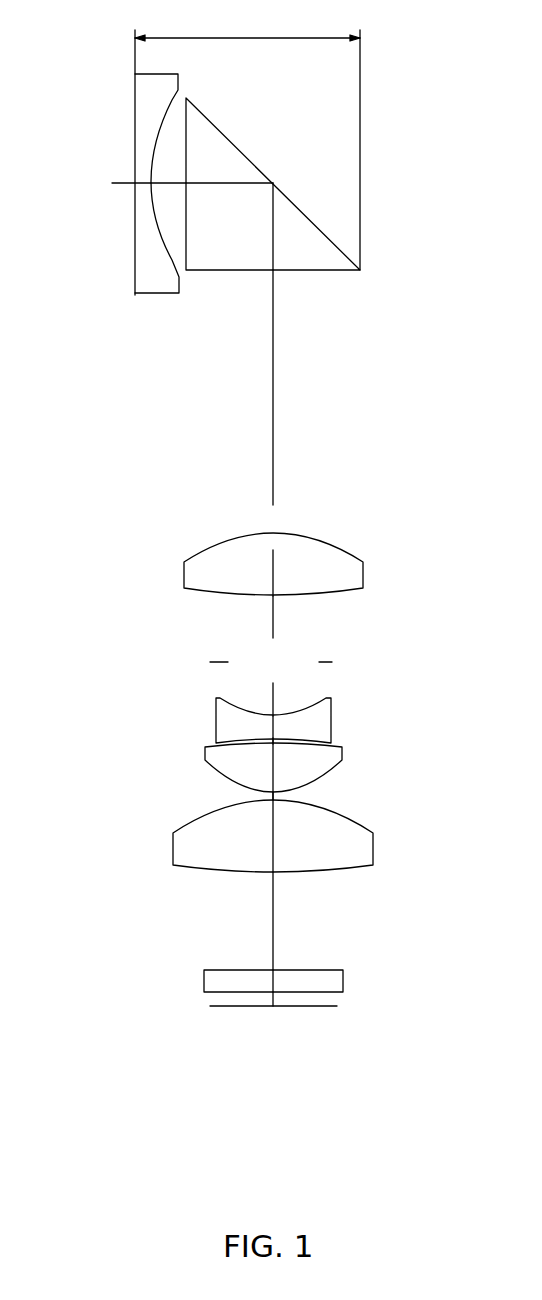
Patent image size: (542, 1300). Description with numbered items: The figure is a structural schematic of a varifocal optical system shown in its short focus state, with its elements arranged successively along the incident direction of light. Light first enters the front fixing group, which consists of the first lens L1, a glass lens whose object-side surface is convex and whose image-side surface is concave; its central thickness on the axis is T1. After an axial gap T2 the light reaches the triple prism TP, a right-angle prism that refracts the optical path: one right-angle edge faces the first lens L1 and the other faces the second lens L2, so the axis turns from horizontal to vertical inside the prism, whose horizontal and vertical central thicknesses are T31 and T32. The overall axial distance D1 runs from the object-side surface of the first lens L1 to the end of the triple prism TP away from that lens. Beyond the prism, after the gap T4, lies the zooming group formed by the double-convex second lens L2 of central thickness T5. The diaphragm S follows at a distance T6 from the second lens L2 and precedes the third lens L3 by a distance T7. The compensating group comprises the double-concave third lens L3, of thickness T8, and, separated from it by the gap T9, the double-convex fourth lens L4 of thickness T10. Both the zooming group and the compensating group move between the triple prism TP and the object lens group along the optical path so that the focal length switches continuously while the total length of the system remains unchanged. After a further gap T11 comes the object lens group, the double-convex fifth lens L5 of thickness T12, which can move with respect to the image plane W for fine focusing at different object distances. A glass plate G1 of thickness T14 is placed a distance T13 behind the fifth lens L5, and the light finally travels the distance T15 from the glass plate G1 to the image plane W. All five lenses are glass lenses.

The first lens L1 is at (148, 105).
The triple prism TP is at (307, 243).
The second lens L2 is at (307, 570).
The diaphragm S is at (322, 662).
The third lens L3 is at (317, 725).
The fourth lens L4 is at (312, 758).
The fifth lens L5 is at (330, 853).
The glass plate G1 is at (298, 984).
The image plane W is at (302, 1006).
The axial distance from object-side surface of first lens to far end of triple prism D1 is at (247, 28).
The central thickness of the first lens T1 is at (131, 173).
The axial distance from first lens to triple prism T2 is at (168, 173).
The horizontal central thickness of the triple prism T31 is at (229, 173).
The vertical central thickness of the triple prism T32 is at (259, 226).
The axial distance from triple prism to second lens T4 is at (263, 387).
The central thickness of the second lens T5 is at (261, 573).
The axial distance from second lens to diaphragm T6 is at (263, 620).
The axial distance from diaphragm to third lens T7 is at (263, 697).
The central thickness of the third lens T8 is at (262, 729).
The axial distance from third lens to fourth lens T9 is at (273, 738).
The central thickness of the fourth lens T10 is at (261, 771).
The axial distance from fourth lens to fifth lens T11 is at (273, 797).
The central thickness of the fifth lens T12 is at (258, 836).
The axial distance from fifth lens to glass plate T13 is at (258, 921).
The central thickness of the glass plate T14 is at (258, 981).
The axial distance from glass plate to image plane T15 is at (273, 998).